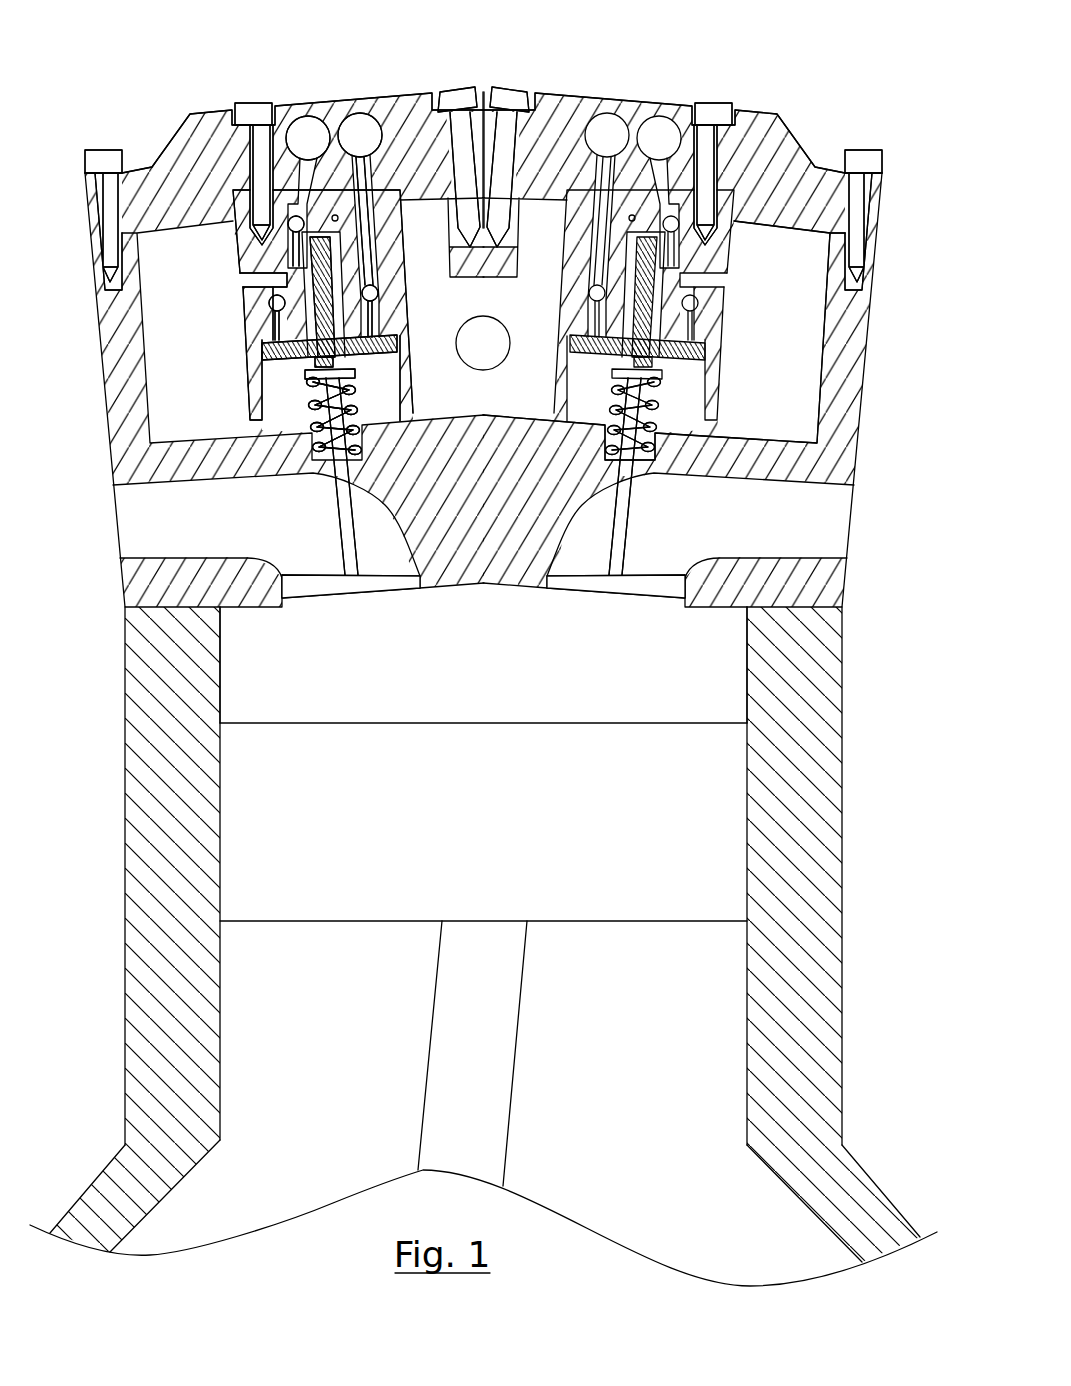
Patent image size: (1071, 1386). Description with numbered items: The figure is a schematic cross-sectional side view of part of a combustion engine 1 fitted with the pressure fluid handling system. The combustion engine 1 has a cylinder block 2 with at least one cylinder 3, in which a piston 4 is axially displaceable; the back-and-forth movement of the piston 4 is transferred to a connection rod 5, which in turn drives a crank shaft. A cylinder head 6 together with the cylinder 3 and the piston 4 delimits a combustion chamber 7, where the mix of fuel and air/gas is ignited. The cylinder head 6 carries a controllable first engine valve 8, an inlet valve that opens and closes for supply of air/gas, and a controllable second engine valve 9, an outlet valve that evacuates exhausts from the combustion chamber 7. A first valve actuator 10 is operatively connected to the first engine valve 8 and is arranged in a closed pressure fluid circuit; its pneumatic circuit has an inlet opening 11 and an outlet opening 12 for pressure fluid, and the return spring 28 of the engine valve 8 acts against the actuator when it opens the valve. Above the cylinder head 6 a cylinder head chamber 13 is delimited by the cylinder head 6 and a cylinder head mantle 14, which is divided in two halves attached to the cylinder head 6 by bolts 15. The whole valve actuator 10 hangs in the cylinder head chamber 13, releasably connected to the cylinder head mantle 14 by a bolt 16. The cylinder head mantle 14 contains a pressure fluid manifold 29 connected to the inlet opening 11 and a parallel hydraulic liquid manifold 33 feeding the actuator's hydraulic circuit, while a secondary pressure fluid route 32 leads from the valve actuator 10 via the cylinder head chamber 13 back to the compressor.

The combustion engine 1 is at (490, 646).
The cylinder block 2 is at (488, 946).
The cylinder 3 is at (833, 920).
The piston 4 is at (638, 890).
The connection rod 5 is at (463, 1083).
The cylinder head 6 is at (516, 332).
The combustion chamber 7 is at (270, 668).
The first engine valve 8 is at (345, 590).
The second engine valve 9 is at (597, 583).
The first valve actuator 10 is at (240, 342).
The inlet opening 11 is at (362, 185).
The outlet opening 12 is at (242, 280).
The cylinder head chamber 13 is at (787, 402).
The cylinder head mantle 14 is at (195, 140).
The bolts 15 is at (97, 157).
The bolt 16 is at (250, 112).
The return spring 28 is at (313, 462).
The pressure fluid manifold 29 is at (357, 117).
The secondary pressure fluid route 32 is at (482, 360).
The hydraulic liquid manifold 33 is at (303, 127).